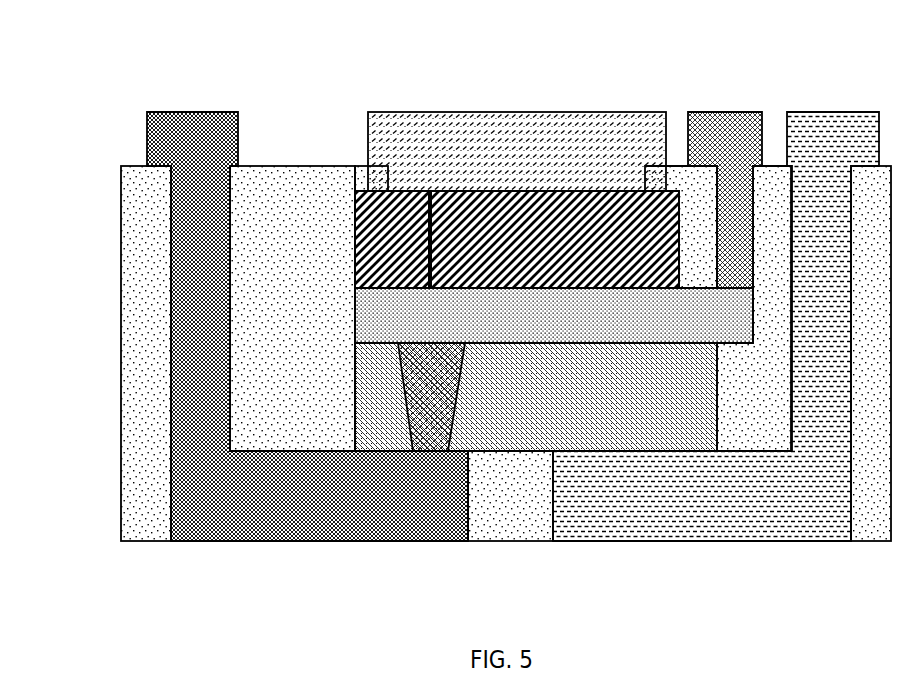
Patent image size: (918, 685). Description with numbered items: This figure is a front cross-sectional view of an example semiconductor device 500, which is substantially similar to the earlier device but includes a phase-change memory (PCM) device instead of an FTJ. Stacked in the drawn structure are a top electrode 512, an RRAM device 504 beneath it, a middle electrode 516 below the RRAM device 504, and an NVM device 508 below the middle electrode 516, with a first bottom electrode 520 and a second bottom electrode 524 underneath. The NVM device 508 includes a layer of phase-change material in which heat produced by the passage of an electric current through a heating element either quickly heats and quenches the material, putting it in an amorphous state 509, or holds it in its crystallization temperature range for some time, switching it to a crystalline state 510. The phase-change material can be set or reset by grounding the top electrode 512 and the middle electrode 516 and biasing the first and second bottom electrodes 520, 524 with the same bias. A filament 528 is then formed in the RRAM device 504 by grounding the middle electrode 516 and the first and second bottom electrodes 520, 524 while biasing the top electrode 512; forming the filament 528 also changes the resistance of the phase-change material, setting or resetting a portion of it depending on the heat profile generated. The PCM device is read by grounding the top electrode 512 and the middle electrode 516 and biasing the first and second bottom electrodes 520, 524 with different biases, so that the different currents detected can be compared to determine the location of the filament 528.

The semiconductor device 500 is at (70, 88).
The RRAM device 504 is at (557, 247).
The NVM device 508 is at (536, 397).
The amorphous state 509 is at (631, 392).
The crystalline state 510 is at (444, 378).
The top electrode 512 is at (557, 163).
The middle electrode 516 is at (557, 330).
The first bottom electrode 520 is at (324, 507).
The second bottom electrode 524 is at (719, 508).
The filament 528 is at (423, 250).